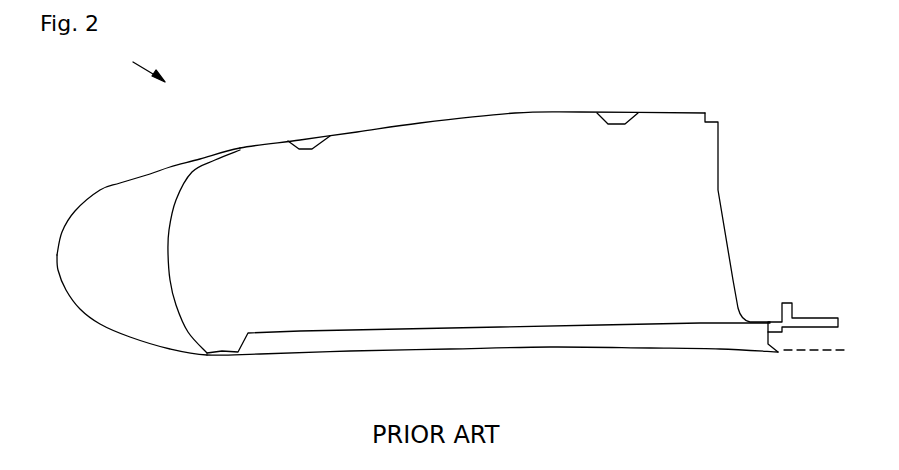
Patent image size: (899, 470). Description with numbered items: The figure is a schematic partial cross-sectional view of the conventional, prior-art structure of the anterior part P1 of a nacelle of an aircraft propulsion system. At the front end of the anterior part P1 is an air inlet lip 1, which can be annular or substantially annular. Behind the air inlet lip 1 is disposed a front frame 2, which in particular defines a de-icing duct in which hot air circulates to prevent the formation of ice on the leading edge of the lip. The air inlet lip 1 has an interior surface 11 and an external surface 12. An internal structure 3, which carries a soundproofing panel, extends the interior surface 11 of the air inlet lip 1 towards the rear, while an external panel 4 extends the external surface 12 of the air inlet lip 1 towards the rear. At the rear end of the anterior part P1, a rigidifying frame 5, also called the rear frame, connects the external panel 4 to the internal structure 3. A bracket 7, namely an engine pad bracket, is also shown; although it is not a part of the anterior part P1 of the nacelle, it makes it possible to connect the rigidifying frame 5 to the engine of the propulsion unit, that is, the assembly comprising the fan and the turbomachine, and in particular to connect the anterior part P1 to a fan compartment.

The air inlet lip 1 is at (120, 185).
The front frame 2 is at (170, 278).
The internal structure 3 is at (398, 343).
The external panel 4 is at (515, 113).
The rigidifying frame 5 is at (728, 243).
The bracket 7 is at (808, 313).
The interior surface 11 is at (127, 342).
The external surface 12 is at (167, 165).
The anterior part P1 is at (133, 62).